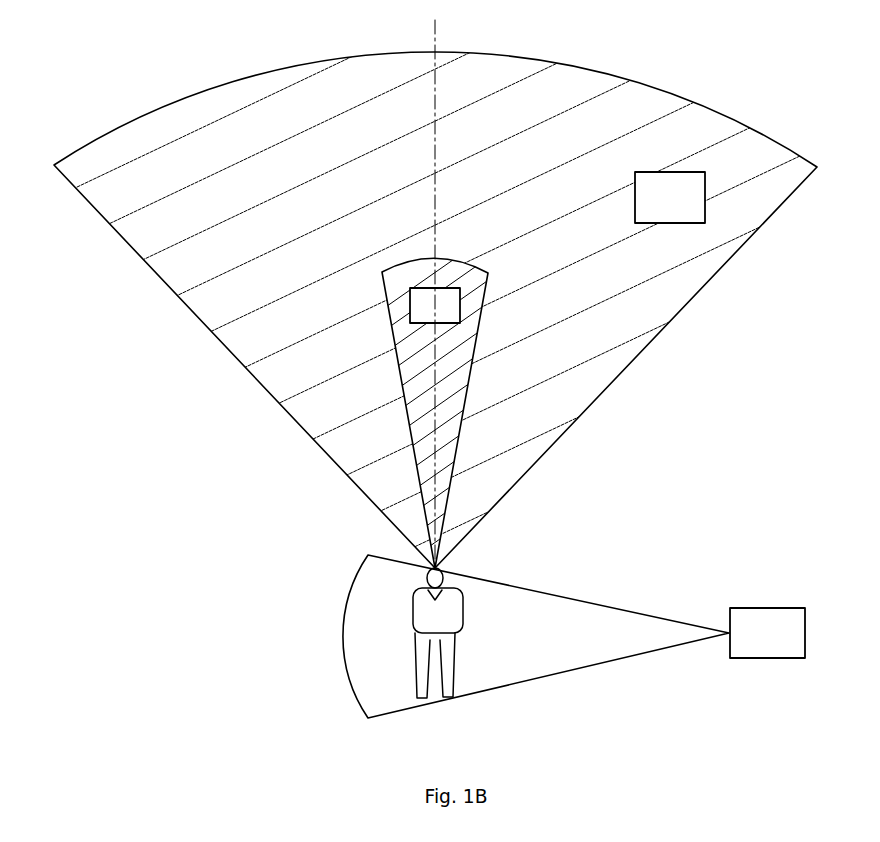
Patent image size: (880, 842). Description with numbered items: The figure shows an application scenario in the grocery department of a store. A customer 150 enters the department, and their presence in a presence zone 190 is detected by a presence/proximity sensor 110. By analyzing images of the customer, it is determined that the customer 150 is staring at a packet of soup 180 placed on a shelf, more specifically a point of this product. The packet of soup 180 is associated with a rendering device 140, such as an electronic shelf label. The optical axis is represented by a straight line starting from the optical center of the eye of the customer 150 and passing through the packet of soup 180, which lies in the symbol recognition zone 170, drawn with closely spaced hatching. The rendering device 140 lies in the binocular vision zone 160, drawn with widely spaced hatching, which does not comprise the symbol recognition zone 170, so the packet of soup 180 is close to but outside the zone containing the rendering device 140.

The presence/proximity sensor 110 is at (785, 646).
The rendering device 140 is at (653, 211).
The customer 150 is at (462, 611).
The binocular vision zone 160 is at (547, 451).
The symbol recognition zone 170 is at (475, 363).
The packet of soup 180 is at (460, 305).
The presence zone 190 is at (510, 685).